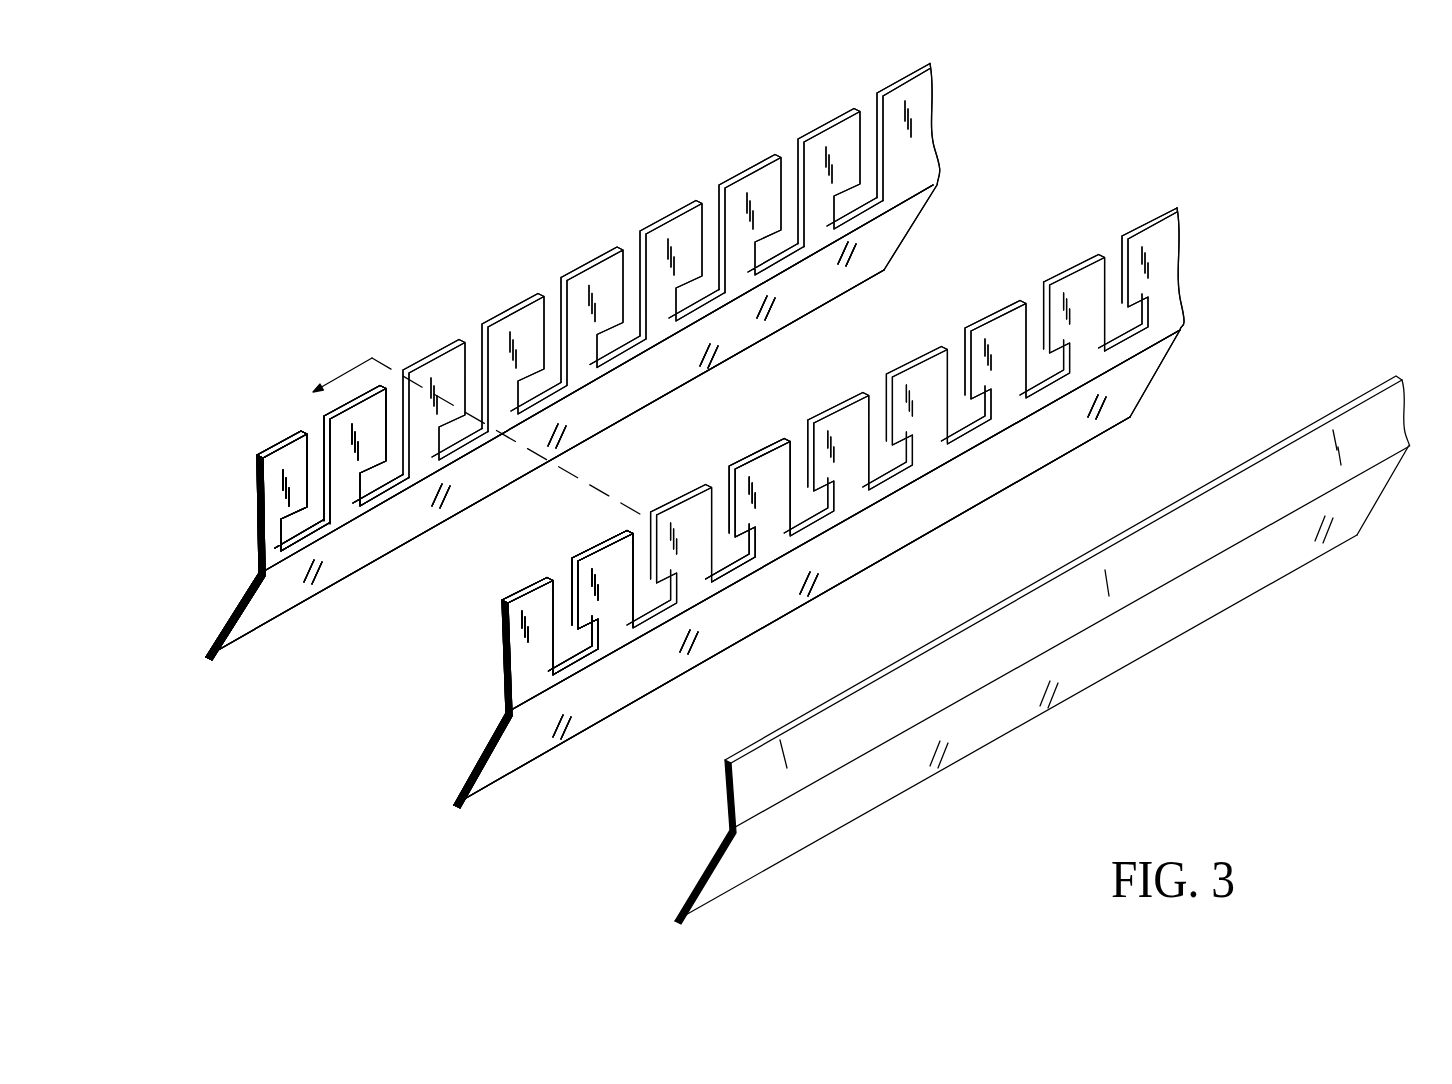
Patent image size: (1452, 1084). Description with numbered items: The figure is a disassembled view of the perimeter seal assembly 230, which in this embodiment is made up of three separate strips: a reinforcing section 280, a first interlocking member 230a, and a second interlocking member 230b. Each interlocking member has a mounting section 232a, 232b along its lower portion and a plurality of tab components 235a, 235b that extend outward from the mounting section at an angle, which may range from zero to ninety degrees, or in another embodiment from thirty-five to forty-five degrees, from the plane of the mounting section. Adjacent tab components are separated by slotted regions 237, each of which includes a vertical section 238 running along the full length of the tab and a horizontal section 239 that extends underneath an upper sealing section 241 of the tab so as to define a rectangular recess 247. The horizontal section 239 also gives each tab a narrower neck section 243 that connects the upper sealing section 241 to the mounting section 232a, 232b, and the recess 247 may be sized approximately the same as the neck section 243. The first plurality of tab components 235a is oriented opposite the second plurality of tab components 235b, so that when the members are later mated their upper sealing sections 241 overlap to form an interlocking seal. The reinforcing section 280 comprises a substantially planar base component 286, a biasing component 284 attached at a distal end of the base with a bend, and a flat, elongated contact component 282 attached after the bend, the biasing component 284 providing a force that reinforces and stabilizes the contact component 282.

The perimeter seal assembly 230 is at (654, 438).
The first interlocking member 230a is at (229, 573).
The second interlocking member 230b is at (476, 718).
The mounting section 232a is at (258, 608).
The mounting section 232b is at (497, 748).
The first plurality of tab components 235a is at (257, 450).
The second plurality of tab components 235b is at (764, 491).
The slotted region 237 is at (315, 440).
The vertical section 238 is at (313, 476).
The horizontal section 239 is at (251, 580).
The upper sealing section 241 is at (362, 407).
The neck section 243 is at (346, 503).
The rectangular recess 247 is at (363, 486).
The reinforcing section 280 is at (1042, 650).
The contact component 282 is at (810, 720).
The biasing component 284 is at (727, 831).
The base component 286 is at (733, 872).